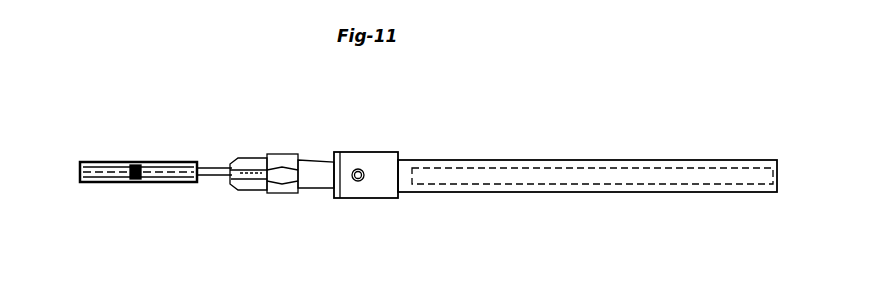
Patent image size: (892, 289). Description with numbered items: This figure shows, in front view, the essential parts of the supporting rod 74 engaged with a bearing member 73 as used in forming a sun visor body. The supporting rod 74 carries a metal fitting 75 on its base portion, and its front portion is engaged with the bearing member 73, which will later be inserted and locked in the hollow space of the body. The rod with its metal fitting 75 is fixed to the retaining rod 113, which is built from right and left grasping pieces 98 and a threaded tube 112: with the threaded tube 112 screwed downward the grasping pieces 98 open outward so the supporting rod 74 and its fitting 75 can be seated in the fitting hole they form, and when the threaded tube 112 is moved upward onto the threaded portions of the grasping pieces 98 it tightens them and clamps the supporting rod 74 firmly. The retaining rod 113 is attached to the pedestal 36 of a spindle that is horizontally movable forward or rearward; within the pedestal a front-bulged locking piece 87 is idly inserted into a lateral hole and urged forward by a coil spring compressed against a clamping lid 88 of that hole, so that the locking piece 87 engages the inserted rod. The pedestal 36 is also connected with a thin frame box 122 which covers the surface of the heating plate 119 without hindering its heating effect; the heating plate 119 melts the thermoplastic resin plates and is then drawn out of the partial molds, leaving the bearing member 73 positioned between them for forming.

The pedestal 36 is at (376, 160).
The bearing member 73 is at (169, 184).
The supporting rod 74 is at (216, 178).
The metal fitting 75 is at (246, 158).
The locking piece 87 is at (363, 178).
The clamping lid 88 is at (358, 182).
The grasping pieces 98 is at (259, 168).
The threaded tube 112 is at (281, 190).
The retaining rod 113 is at (318, 186).
The heating plate 119 is at (692, 160).
The thin frame box 122 is at (547, 193).